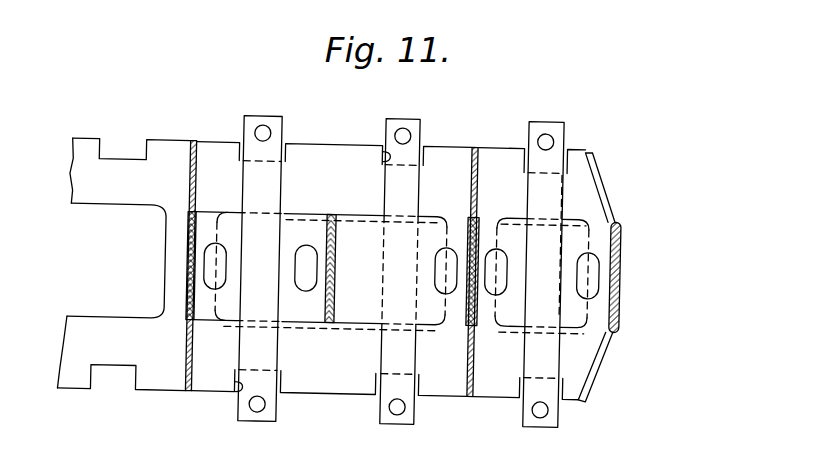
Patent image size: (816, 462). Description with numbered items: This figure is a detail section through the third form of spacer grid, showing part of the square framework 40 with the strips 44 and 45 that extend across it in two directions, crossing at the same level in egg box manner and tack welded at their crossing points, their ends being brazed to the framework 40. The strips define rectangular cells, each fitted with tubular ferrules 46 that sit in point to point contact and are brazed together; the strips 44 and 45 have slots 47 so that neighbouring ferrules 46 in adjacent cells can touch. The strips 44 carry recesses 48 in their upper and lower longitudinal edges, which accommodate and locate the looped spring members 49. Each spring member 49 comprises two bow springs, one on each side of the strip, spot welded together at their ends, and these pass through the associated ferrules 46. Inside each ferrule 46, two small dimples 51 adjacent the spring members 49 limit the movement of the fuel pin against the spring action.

The square framework 40 is at (632, 254).
The parallel strips 44 is at (594, 209).
The parallel strips 45 is at (194, 156).
The tubular ferrules 46 is at (619, 218).
The slots 47 is at (576, 213).
The recesses 48 is at (381, 157).
The looped spring members 49 is at (413, 123).
The small dimples 51 is at (598, 289).